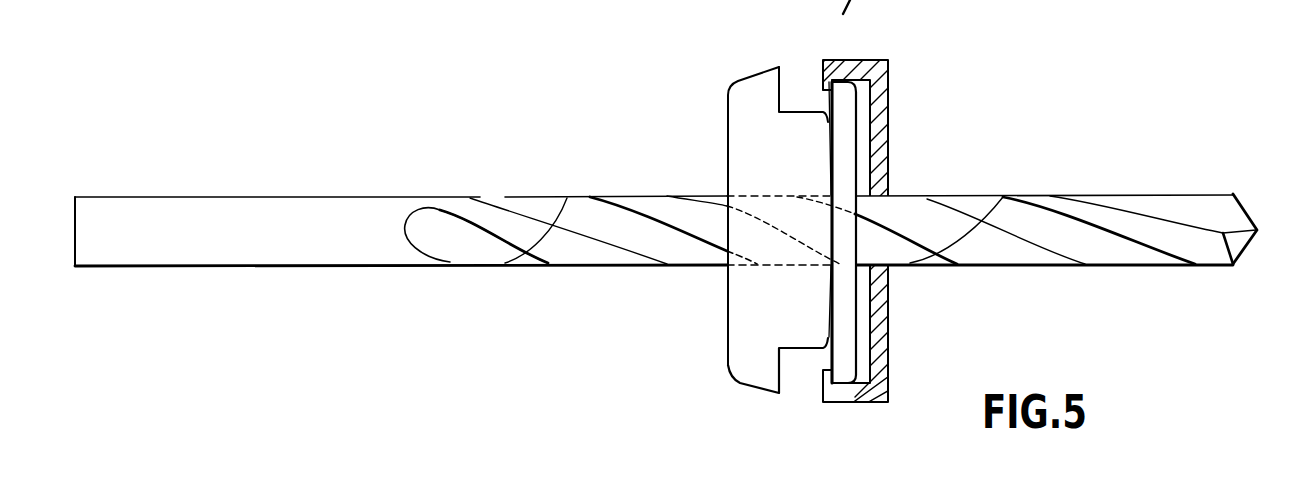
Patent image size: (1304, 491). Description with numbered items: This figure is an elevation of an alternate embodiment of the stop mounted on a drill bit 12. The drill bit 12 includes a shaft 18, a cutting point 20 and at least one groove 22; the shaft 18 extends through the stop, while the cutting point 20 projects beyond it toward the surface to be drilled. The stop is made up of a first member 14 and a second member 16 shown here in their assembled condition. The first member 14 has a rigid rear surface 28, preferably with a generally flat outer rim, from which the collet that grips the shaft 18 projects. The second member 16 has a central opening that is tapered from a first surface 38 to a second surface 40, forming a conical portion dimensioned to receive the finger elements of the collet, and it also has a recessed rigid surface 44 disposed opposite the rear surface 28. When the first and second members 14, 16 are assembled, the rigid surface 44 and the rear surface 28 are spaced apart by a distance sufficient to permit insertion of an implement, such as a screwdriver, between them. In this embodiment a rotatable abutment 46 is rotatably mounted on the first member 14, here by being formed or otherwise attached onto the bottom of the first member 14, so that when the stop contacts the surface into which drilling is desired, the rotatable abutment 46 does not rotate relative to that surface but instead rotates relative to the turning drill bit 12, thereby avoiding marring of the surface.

The drill bit 12 is at (345, 267).
The first member 14 is at (822, 80).
The second member 16 is at (742, 388).
The shaft 18 is at (346, 196).
The cutting point 20 is at (1258, 230).
The groove 22 is at (1118, 255).
The rear surface 28 is at (827, 357).
The first surface 38 is at (828, 326).
The second surface 40 is at (729, 312).
The rigid surface 44 is at (788, 76).
The rotatable abutment 46 is at (888, 113).